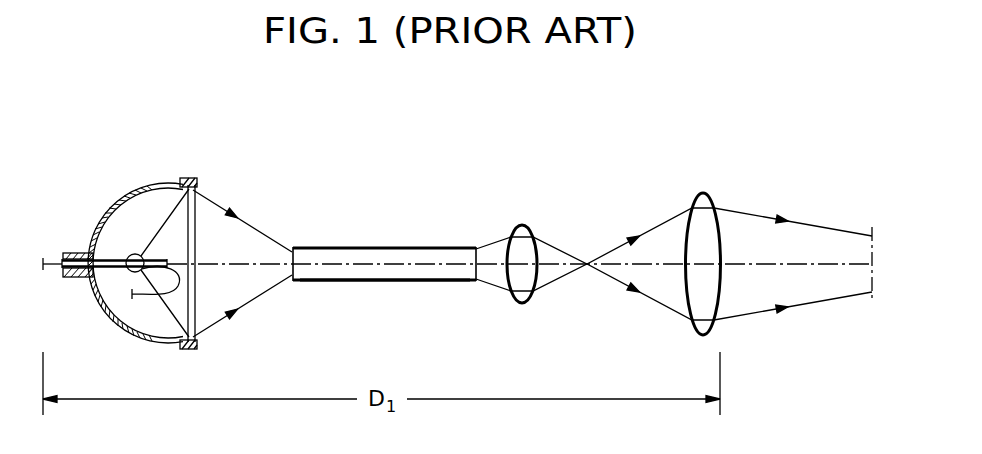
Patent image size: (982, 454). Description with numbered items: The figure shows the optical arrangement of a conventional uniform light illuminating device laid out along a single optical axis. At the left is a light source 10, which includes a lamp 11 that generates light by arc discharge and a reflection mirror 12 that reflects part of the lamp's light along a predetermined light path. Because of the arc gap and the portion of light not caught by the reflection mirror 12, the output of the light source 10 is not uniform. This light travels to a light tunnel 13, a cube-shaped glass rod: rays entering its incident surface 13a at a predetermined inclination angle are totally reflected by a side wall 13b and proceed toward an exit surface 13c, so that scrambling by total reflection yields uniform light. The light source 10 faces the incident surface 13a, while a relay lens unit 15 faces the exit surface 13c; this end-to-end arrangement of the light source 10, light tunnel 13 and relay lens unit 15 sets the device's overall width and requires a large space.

The light source 10 is at (175, 160).
The lamp 11 is at (130, 272).
The reflection mirror 12 is at (128, 205).
The light tunnel 13 is at (386, 247).
The incident surface 13a is at (293, 278).
The side wall 13b is at (390, 280).
The exit surface 13c is at (482, 278).
The relay lens unit 15 is at (522, 190).